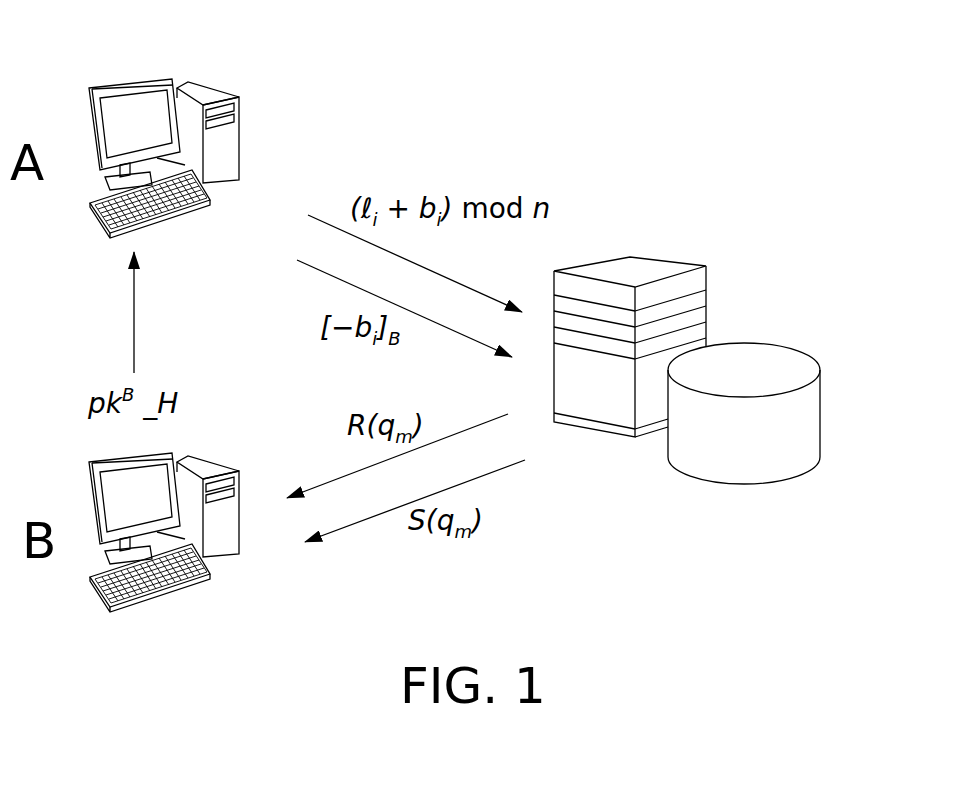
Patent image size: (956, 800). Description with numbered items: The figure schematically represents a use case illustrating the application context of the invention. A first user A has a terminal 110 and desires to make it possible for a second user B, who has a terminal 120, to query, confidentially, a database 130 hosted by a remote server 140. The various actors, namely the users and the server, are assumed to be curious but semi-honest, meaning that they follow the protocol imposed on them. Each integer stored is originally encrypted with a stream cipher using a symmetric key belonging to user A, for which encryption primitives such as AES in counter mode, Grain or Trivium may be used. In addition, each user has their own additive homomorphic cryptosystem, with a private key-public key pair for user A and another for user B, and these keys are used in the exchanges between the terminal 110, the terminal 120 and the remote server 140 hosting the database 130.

The terminal 110 is at (205, 98).
The terminal 120 is at (205, 468).
The database 130 is at (793, 357).
The remote server 140 is at (665, 267).